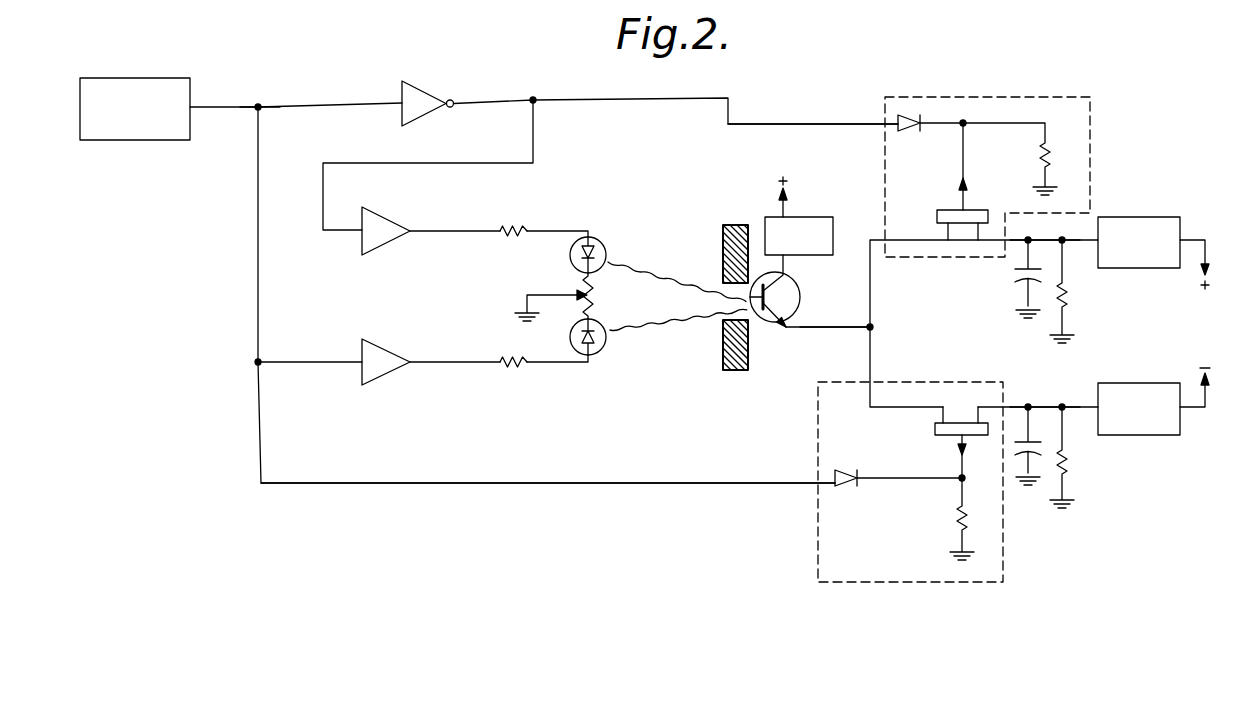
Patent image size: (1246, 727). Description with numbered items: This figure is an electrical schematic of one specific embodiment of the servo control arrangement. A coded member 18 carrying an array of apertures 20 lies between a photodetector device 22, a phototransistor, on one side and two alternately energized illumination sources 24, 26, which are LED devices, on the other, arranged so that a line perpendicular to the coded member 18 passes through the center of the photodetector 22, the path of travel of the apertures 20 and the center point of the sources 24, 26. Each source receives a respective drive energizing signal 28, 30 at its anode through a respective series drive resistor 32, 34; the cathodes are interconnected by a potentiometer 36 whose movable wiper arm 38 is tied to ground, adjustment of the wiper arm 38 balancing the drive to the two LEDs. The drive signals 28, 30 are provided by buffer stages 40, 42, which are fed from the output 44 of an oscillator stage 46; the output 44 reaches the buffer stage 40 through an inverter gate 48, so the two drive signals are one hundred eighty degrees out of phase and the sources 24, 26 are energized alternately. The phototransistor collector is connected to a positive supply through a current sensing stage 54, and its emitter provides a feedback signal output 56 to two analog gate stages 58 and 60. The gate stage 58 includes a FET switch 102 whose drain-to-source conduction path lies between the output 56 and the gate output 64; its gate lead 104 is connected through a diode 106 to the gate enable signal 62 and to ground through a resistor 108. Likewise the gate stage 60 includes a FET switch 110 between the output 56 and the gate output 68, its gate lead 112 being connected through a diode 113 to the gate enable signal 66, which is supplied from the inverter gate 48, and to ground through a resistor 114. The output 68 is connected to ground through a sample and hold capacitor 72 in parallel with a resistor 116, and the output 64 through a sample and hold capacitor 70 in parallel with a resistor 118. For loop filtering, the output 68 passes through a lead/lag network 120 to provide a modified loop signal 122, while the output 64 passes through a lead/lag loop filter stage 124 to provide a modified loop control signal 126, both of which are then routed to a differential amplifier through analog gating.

The coded member 18 is at (722, 248).
The array of apertures 20 is at (722, 315).
The photodetector device 22 is at (765, 326).
The illumination source 24 is at (605, 252).
The illumination source 26 is at (603, 341).
The drive energizing signal 28 is at (431, 231).
The drive energizing signal 30 is at (419, 360).
The series drive resistor 32 is at (512, 226).
The series drive resistor 34 is at (517, 364).
The potentiometer 36 is at (596, 290).
The movable wiper arm 38 is at (525, 293).
The buffer stage 40 is at (380, 216).
The buffer stage 42 is at (384, 374).
The oscillator output 44 is at (262, 105).
The oscillator stage 46 is at (145, 78).
The inverter gate 48 is at (426, 84).
The current sensing stage 54 is at (816, 217).
The feedback signal output 56 is at (848, 325).
The analog gate stage 58 is at (932, 382).
The analog gate stage 60 is at (1021, 97).
The gate enable signal 62 is at (754, 478).
The gate output 64 is at (1028, 405).
The gate enable signal input 66 is at (770, 123).
The gate output 68 is at (1040, 241).
The sample and hold capacitor 70 is at (1014, 445).
The sample and hold capacitor 72 is at (1015, 273).
The FET switch 102 is at (950, 437).
The gate lead 104 is at (965, 472).
The diode 106 is at (852, 467).
The resistor 108 is at (955, 520).
The FET switch 110 is at (937, 215).
The gate lead 112 is at (958, 200).
The first diode 113 is at (900, 114).
The resistor 114 is at (1040, 158).
The resistor 116 is at (1068, 295).
The resistor 118 is at (1066, 465).
The lead/lag network 120 is at (1122, 217).
The modified loop signal 122 is at (1197, 240).
The lead/lag loop filter stage 124 is at (1123, 383).
The modified loop control signal 126 is at (1195, 407).